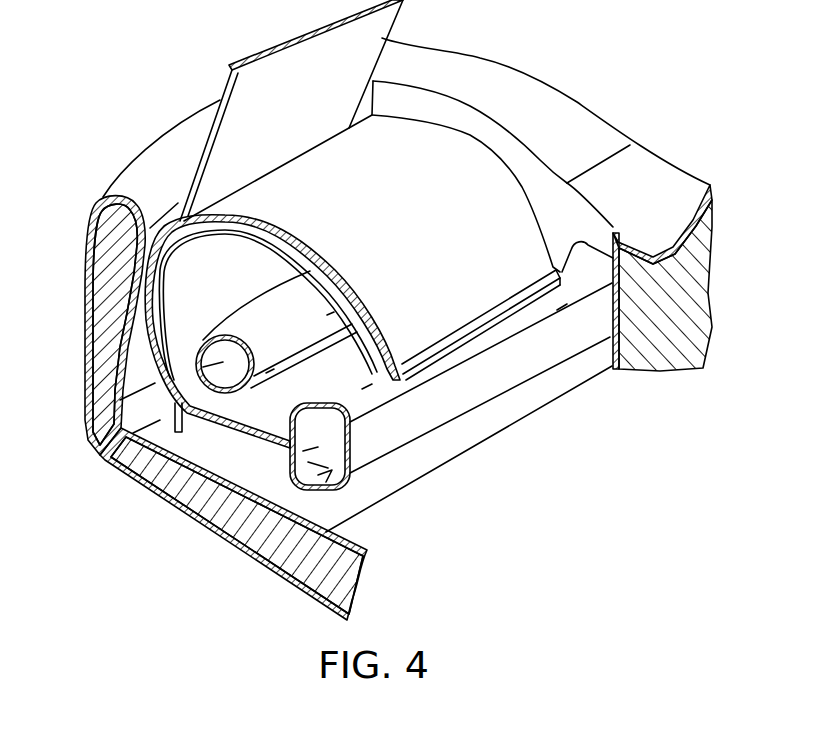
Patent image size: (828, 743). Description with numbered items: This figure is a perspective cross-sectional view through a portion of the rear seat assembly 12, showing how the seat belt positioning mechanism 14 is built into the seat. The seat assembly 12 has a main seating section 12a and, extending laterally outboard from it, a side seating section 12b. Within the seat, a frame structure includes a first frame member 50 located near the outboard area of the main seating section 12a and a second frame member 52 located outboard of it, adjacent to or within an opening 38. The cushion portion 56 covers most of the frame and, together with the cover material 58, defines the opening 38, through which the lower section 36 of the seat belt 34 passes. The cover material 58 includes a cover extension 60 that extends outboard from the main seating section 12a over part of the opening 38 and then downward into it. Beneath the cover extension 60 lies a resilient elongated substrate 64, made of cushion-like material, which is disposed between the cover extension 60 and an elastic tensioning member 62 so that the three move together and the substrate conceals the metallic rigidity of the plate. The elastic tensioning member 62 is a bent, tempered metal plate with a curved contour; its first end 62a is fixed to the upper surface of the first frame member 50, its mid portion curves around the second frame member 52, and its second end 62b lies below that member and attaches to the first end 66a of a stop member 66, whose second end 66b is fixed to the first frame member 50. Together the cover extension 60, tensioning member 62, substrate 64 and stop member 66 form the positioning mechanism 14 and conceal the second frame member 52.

The seat assembly 12 is at (508, 63).
The main seating section 12a is at (645, 188).
The side seating section 12b is at (528, 102).
The seat belt positioning mechanism 14 is at (483, 268).
The seat belt 34 is at (333, 55).
The lower section 36 is at (150, 442).
The opening 38 is at (170, 213).
The first frame member 50 is at (445, 408).
The second frame member 52 is at (270, 318).
The cushion portion 56 is at (675, 298).
The cover material 58 is at (598, 142).
The cover extension 60 is at (447, 150).
The elastic tensioning member 62 is at (222, 234).
The first end 62a is at (385, 383).
The second end 62b is at (174, 377).
The resilient elongated substrate 64 is at (255, 222).
The stop member 66 is at (294, 390).
The first end 66a is at (237, 405).
The second end 66b is at (322, 466).